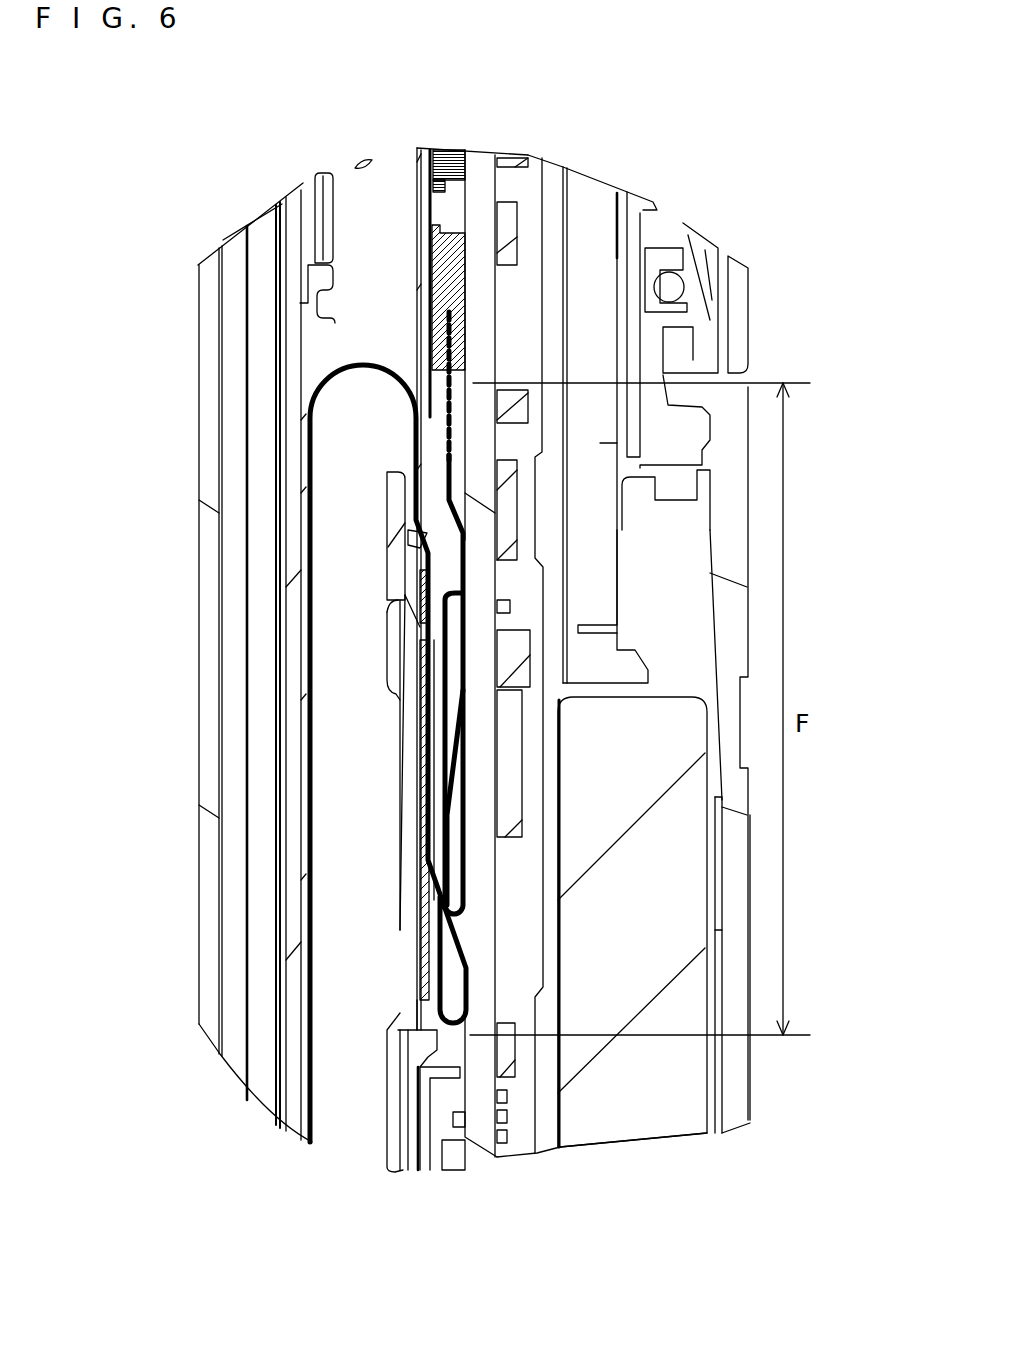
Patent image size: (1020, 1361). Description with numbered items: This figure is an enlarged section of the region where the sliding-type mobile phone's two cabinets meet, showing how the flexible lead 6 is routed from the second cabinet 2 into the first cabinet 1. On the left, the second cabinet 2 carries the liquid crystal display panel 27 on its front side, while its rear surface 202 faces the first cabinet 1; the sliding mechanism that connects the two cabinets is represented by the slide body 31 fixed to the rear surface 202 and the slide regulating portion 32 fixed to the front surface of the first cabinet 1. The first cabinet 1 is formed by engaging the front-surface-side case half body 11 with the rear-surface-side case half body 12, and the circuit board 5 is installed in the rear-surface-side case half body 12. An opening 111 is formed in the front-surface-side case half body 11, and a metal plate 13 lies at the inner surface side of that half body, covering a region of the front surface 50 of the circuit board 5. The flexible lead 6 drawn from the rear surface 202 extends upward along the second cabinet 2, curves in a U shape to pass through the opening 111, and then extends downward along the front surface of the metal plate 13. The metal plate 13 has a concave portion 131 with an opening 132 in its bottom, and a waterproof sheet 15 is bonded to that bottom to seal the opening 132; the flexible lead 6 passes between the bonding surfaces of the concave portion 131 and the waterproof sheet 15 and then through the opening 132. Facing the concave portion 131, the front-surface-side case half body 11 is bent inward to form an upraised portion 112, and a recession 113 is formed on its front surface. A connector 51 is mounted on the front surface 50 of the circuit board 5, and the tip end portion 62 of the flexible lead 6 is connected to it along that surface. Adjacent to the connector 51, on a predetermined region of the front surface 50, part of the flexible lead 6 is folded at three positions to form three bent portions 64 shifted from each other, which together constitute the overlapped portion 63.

The first cabinet 1 is at (517, 1243).
The second cabinet 2 is at (256, 1100).
The circuit board 5 is at (487, 195).
The flexible lead 6 is at (320, 385).
The front-surface-side case half body 11 is at (390, 1122).
The rear-surface-side case half body 12 is at (740, 1106).
The metal plate 13 is at (420, 188).
The waterproof sheet 15 is at (422, 918).
The liquid crystal display panel 27 is at (205, 946).
The slide body 31 is at (325, 228).
The slide regulating portion 32 is at (385, 488).
The front surface 50 is at (463, 208).
The connector 51 is at (455, 286).
The tip end portion 62 is at (450, 387).
The overlapped portion 63 is at (476, 797).
The bent portions 64 is at (448, 590).
The opening 111 is at (395, 212).
The upraised portion 112 is at (410, 672).
The recession 113 is at (395, 727).
The concave portion 131 is at (413, 548).
The opening 132 is at (432, 934).
The rear surface 202 is at (310, 357).